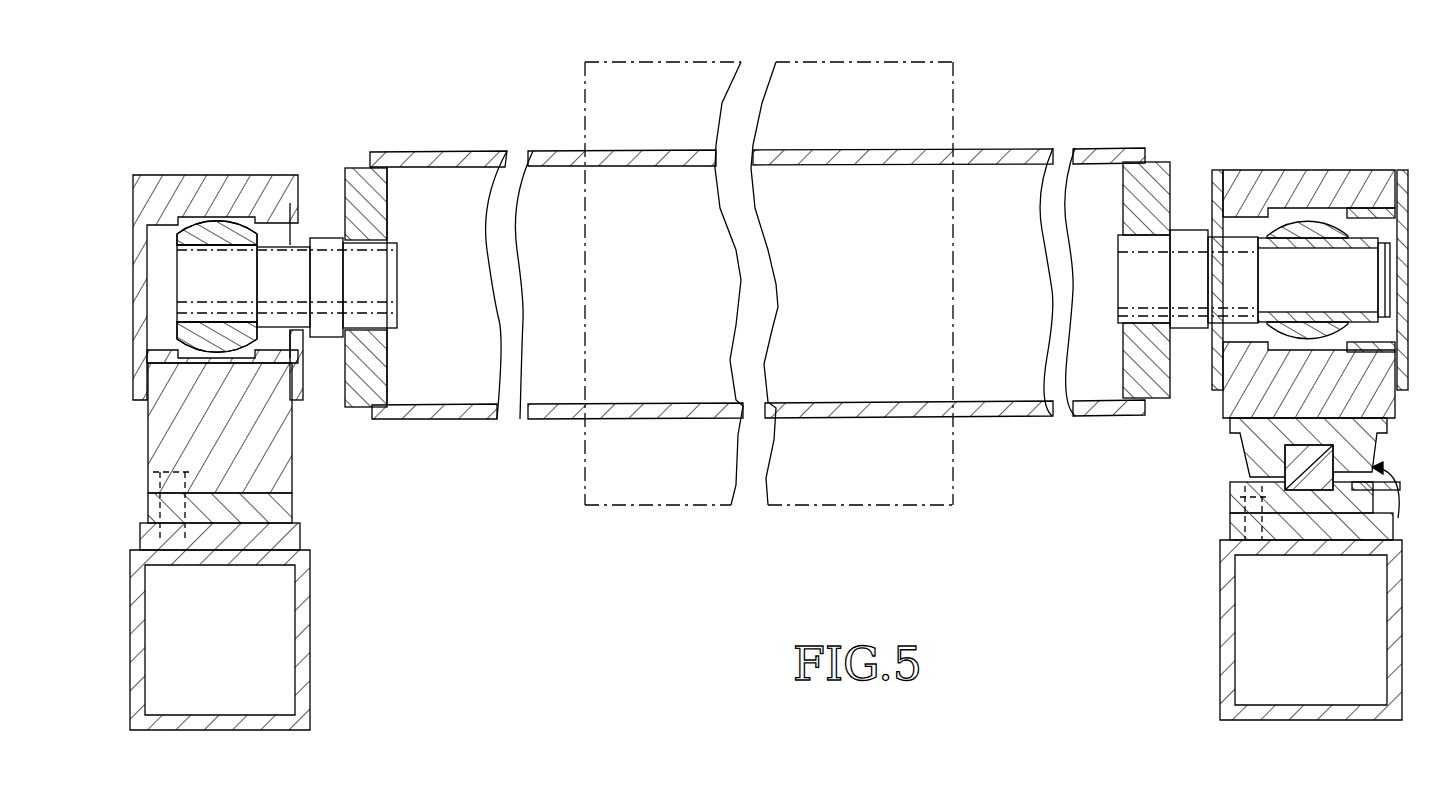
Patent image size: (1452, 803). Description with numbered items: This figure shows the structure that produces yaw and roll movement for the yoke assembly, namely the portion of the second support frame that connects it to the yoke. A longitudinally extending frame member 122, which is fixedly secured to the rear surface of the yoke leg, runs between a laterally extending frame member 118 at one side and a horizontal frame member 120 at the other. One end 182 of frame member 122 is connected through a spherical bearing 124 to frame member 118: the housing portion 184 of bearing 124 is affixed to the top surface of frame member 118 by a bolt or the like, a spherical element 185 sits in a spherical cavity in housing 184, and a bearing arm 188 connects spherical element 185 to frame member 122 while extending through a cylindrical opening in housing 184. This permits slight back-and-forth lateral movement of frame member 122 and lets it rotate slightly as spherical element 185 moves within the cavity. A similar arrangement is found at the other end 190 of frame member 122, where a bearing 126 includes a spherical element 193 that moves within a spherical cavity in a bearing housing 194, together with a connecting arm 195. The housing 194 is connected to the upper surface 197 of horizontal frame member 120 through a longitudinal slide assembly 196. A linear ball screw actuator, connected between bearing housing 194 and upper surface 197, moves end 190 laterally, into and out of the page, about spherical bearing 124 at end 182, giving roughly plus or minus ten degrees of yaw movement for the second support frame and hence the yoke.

The laterally extending frame member 118 is at (275, 625).
The horizontal frame member 120 is at (1403, 693).
The longitudinally extending frame member 122 is at (1007, 147).
The spherical bearing 124 is at (292, 170).
The bearing 126 is at (1390, 170).
The end of frame member 182 is at (378, 152).
The housing portion 184 is at (136, 278).
The spherical element 185 is at (222, 224).
The bearing arm 188 is at (380, 283).
The other end of frame member 190 is at (1147, 162).
The spherical element 193 is at (1297, 223).
The bearing housing 194 is at (1408, 170).
The connecting arm 195 is at (1147, 255).
The longitudinal slide assembly 196 is at (1383, 542).
The upper surface 197 is at (1227, 540).